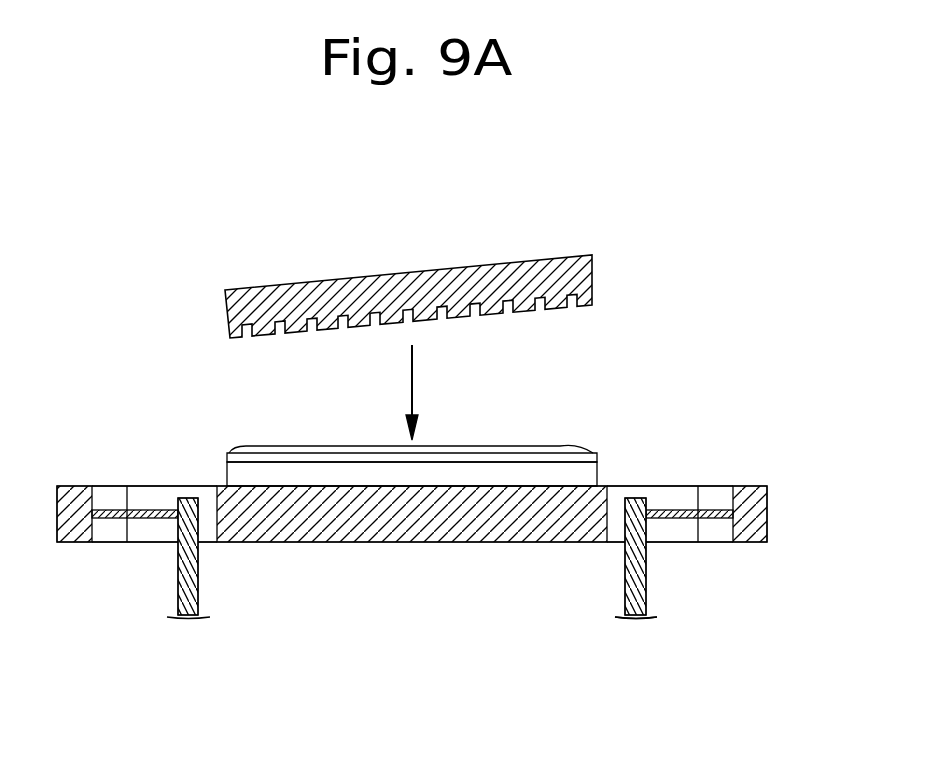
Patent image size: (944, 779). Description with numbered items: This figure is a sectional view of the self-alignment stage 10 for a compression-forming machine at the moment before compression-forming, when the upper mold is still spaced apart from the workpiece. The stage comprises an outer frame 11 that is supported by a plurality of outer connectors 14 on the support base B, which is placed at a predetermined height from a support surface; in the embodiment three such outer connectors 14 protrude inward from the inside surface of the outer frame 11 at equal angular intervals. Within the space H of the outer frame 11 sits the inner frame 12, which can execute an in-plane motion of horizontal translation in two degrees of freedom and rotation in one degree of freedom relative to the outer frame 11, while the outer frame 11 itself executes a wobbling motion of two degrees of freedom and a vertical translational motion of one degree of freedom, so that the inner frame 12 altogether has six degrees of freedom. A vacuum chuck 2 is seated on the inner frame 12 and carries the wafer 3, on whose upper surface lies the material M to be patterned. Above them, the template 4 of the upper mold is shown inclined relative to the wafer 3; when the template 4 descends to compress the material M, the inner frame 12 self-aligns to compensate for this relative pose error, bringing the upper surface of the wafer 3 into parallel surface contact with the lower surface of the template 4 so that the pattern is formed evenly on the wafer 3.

The self-alignment stage 10 is at (185, 313).
The template 4 is at (423, 275).
The material M is at (449, 452).
The wafer 3 is at (541, 458).
The vacuum chuck 2 is at (573, 472).
The inner frame 12 is at (371, 544).
The outer frame 11 is at (80, 486).
The outer connectors 14 is at (146, 510).
The space H is at (190, 498).
The support base B is at (624, 586).